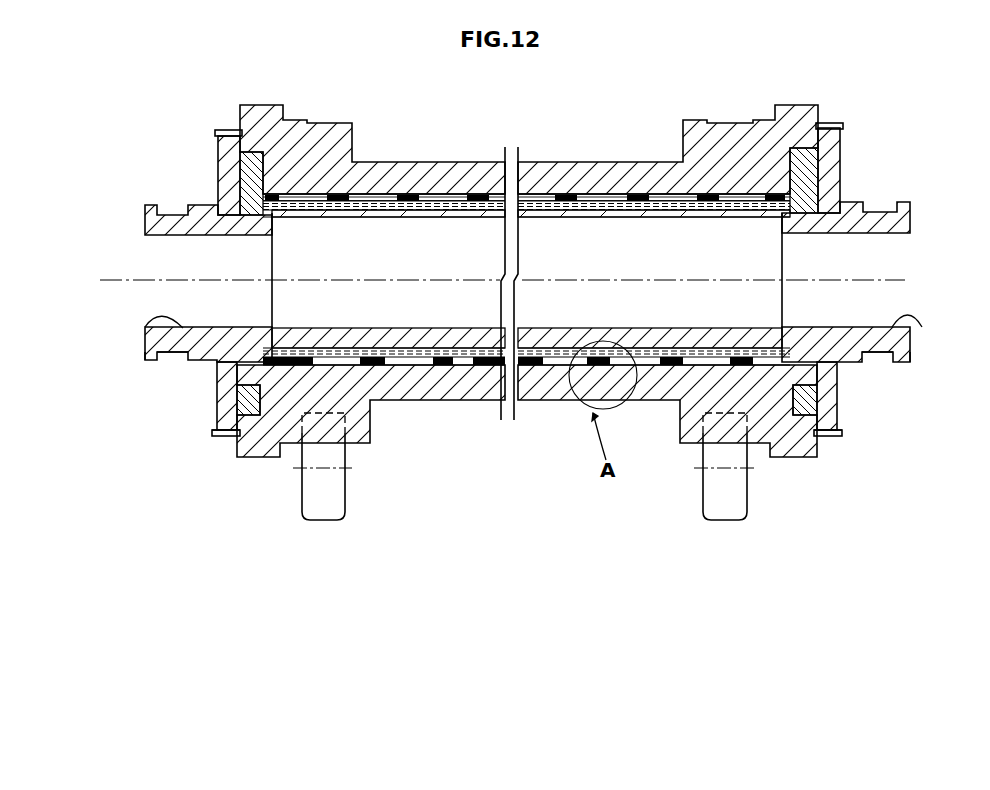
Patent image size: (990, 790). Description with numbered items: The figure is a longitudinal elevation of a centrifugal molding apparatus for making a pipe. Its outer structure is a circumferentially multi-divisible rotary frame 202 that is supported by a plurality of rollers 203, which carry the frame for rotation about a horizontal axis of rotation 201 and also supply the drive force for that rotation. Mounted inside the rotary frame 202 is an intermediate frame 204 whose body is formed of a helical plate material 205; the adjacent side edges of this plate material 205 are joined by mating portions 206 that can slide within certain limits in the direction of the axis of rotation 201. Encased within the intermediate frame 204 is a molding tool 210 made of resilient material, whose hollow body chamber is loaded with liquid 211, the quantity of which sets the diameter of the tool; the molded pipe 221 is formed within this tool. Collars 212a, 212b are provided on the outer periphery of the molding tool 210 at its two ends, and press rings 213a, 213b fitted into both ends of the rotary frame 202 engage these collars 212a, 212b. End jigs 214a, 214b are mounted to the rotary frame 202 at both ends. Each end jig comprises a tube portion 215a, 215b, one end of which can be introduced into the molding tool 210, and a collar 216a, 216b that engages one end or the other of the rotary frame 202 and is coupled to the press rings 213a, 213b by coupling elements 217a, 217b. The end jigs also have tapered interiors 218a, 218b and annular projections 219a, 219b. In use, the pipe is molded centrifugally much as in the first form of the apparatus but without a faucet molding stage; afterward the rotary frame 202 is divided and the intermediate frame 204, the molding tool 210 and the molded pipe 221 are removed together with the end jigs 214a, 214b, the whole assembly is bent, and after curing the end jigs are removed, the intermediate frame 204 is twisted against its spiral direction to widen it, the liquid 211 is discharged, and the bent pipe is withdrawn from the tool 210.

The axis of rotation 201 is at (200, 280).
The rotary frame 202 is at (400, 390).
The rollers 203 is at (315, 510).
The intermediate frame 204 is at (465, 197).
The helical plate material 205 is at (442, 198).
The mating portions 206 is at (405, 196).
The molding tool 210 is at (615, 208).
The liquid 211 is at (470, 362).
The molded pipe 221 is at (543, 340).
The collar 212a is at (245, 190).
The collar 212b is at (812, 193).
The press ring 213a is at (283, 127).
The press ring 213b is at (796, 125).
The end jig 214a is at (142, 362).
The end jig 214b is at (907, 372).
The tube portion 215a is at (177, 350).
The tube portion 215b is at (850, 352).
The collar 216a is at (217, 420).
The collar 216b is at (823, 418).
The coupling element 217a is at (217, 398).
The coupling element 217b is at (837, 402).
The interior of tapered portion 218a is at (143, 326).
The interior of tapered portion 218b is at (922, 327).
The annular projection 219a is at (272, 233).
The annular projection 219b is at (782, 233).